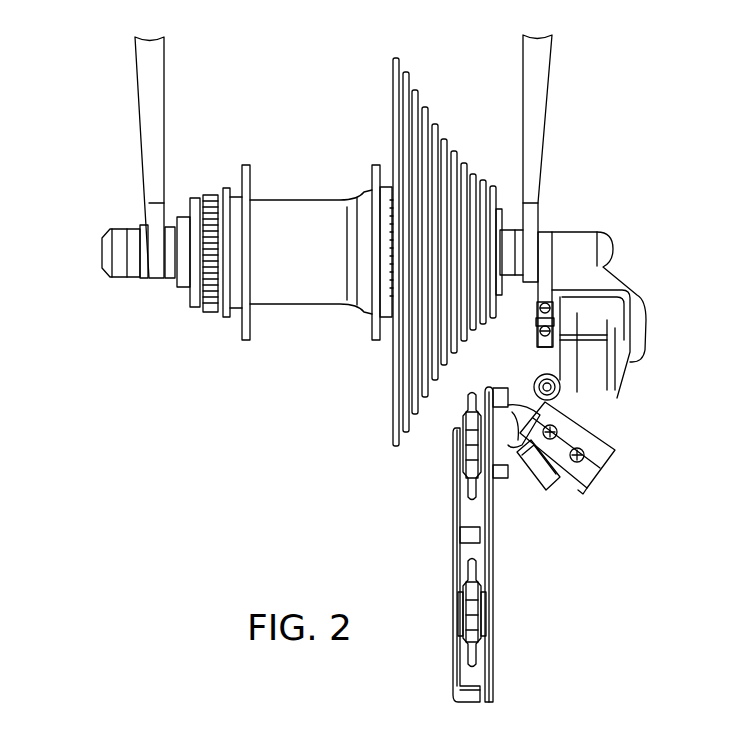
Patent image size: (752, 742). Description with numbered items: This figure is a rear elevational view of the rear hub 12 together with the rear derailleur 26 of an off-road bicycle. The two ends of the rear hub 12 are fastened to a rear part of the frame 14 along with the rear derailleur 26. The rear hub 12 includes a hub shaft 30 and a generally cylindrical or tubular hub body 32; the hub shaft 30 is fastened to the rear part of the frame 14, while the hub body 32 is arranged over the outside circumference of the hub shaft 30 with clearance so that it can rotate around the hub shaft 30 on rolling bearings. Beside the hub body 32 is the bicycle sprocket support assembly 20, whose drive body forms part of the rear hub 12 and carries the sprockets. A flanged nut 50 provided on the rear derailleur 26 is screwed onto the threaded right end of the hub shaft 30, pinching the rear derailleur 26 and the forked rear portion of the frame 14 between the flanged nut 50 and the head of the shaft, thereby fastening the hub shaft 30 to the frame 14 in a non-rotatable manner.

The rear hub 12 is at (331, 209).
The frame 14 is at (137, 87).
The bicycle sprocket support assembly 20 is at (460, 124).
The rear derailleur 26 is at (590, 485).
The hub shaft 30 is at (100, 253).
The hub body 32 is at (312, 303).
The flanged nut 50 is at (615, 252).